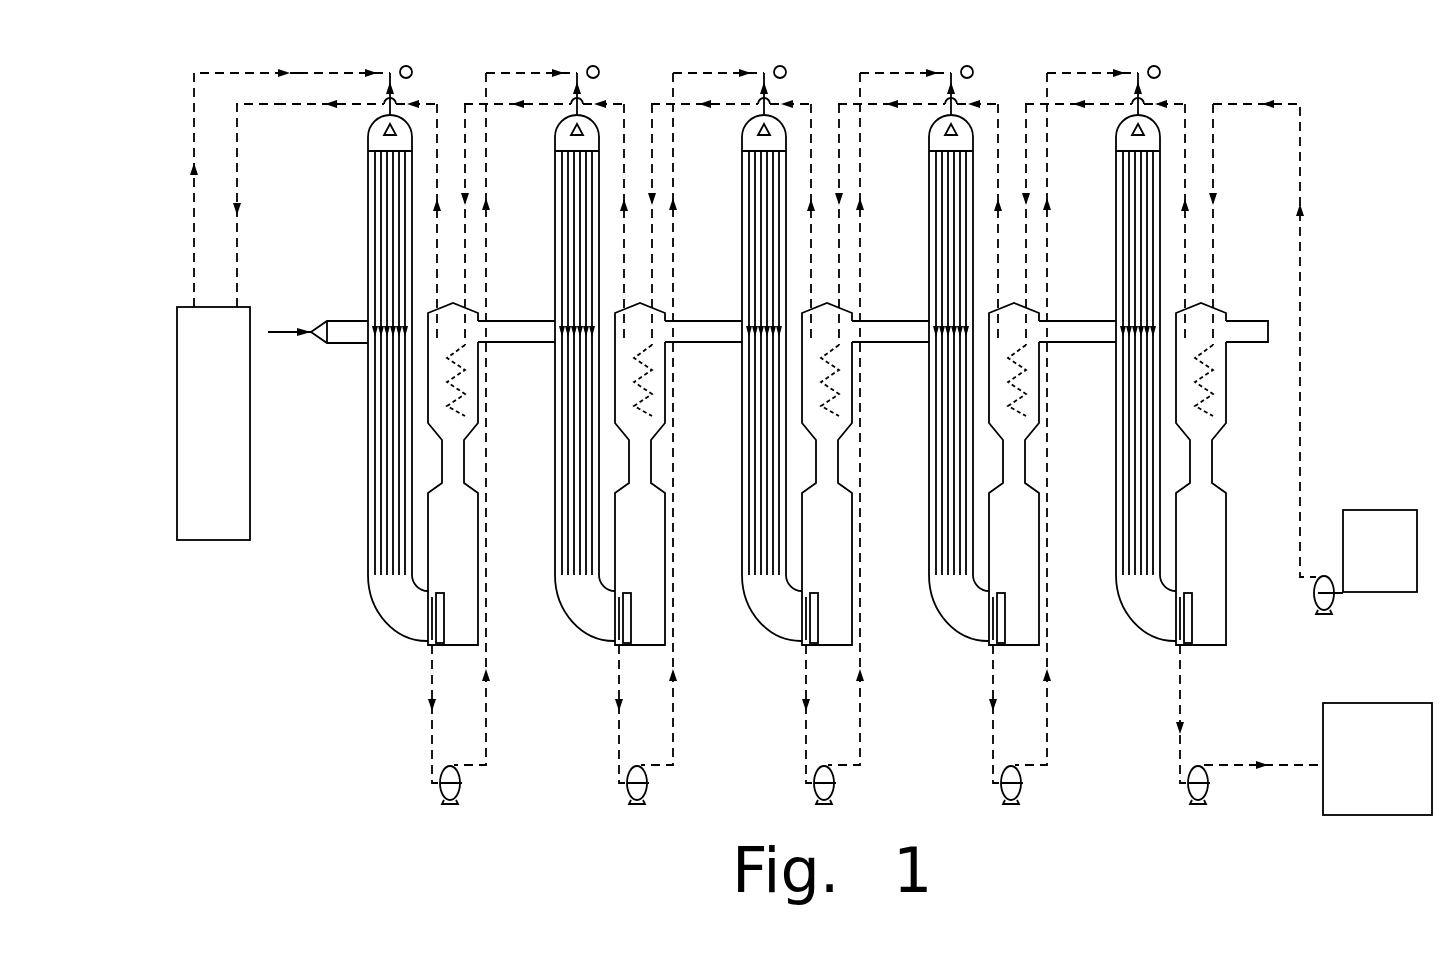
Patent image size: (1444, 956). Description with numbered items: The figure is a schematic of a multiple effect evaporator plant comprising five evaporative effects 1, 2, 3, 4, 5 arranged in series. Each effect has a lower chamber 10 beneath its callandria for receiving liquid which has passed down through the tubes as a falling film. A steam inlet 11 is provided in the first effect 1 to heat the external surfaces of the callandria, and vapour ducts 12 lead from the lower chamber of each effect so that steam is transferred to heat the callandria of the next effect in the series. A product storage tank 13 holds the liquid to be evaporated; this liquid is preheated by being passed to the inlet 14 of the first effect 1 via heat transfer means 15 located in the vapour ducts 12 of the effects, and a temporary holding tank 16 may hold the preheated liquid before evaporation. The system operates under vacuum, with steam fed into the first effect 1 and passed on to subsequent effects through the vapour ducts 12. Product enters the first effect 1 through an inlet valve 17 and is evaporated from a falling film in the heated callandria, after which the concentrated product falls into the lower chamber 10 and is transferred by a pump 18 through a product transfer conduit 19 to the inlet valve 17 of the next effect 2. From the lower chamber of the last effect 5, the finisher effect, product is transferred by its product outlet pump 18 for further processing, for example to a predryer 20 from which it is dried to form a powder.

The first effect 1 is at (368, 433).
The second effect 2 is at (555, 356).
The third effect 3 is at (742, 356).
The fourth effect 4 is at (929, 356).
The last effect 5 is at (1116, 356).
The lower chamber 10 is at (391, 624).
The steam inlet 11 is at (283, 331).
The vapour duct 12 is at (476, 529).
The product storage tank 13 is at (1396, 569).
The inlet 14 is at (388, 114).
The heat transfer means 15 is at (463, 380).
The temporary holding tank 16 is at (196, 428).
The inlet valve 17 is at (391, 70).
The pump 18 is at (461, 784).
The product transfer conduit 19 is at (486, 694).
The predryer 20 is at (1360, 776).